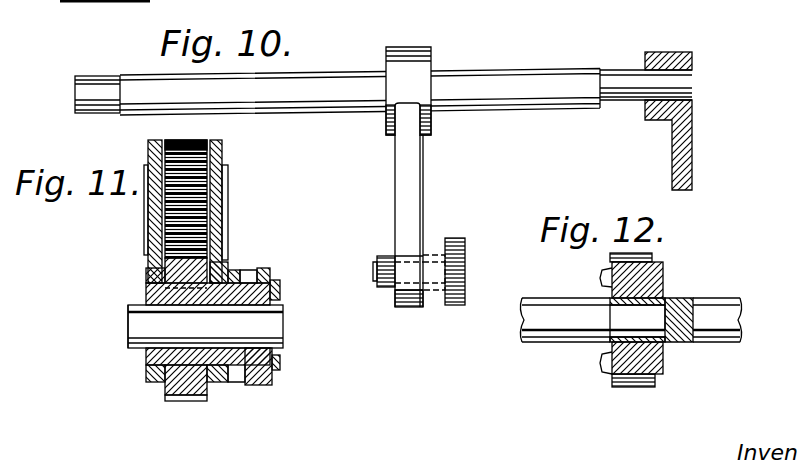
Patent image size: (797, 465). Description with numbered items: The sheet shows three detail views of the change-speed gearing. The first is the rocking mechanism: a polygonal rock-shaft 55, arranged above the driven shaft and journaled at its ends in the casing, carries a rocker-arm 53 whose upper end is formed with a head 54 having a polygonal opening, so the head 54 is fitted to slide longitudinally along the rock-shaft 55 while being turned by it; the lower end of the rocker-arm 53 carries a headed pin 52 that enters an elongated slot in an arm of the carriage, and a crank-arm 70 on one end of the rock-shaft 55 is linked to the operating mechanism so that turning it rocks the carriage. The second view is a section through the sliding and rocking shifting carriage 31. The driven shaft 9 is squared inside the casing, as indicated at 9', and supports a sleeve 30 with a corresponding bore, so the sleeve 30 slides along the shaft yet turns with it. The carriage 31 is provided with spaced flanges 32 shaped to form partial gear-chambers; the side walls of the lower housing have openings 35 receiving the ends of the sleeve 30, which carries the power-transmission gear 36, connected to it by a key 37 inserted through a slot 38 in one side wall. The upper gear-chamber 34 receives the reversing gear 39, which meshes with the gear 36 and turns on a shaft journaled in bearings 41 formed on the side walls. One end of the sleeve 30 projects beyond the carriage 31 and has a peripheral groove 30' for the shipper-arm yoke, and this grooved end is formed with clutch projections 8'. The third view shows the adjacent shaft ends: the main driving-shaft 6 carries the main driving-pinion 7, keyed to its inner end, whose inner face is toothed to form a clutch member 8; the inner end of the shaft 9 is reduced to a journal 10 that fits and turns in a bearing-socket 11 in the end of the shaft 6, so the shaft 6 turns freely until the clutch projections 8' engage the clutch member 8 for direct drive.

In FIG. 10, the rock-shaft 55 is at (530, 76).
In FIG. 10, the head 54 is at (418, 38).
In FIG. 10, the rocker-arm 53 is at (410, 178).
In FIG. 10, the headed pin 52 is at (432, 250).
In FIG. 10, the crank-arm 70 is at (692, 152).
In FIG. 11, the spaced flanges 32 is at (148, 145).
In FIG. 11, the gear-chamber 34 is at (222, 158).
In FIG. 11, the reversing gear 39 is at (208, 182).
In FIG. 11, the shifting carriage 31 is at (228, 206).
In FIG. 11, the bearings 41 is at (145, 212).
In FIG. 11, the key 37 is at (146, 275).
In FIG. 11, the slot 38 is at (165, 288).
In FIG. 11, the sleeve 30 is at (251, 255).
In FIG. 11, the driven shaft 9 is at (222, 314).
In FIG. 12, the driven shaft 9 is at (571, 320).
In FIG. 11, the squared portion 9' is at (112, 326).
In FIG. 11, the openings 35 is at (147, 362).
In FIG. 11, the power-transmission gear 36 is at (200, 390).
In FIG. 11, the peripheral groove 30' is at (253, 390).
In FIG. 11, the clutch projections 8' is at (282, 363).
In FIG. 12, the main driving-shaft 6 is at (725, 302).
In FIG. 12, the bearing-socket 11 is at (655, 345).
In FIG. 12, the main driving-pinion 7 is at (636, 376).
In FIG. 12, the clutch member 8 is at (585, 339).
In FIG. 12, the journal 10 is at (610, 335).